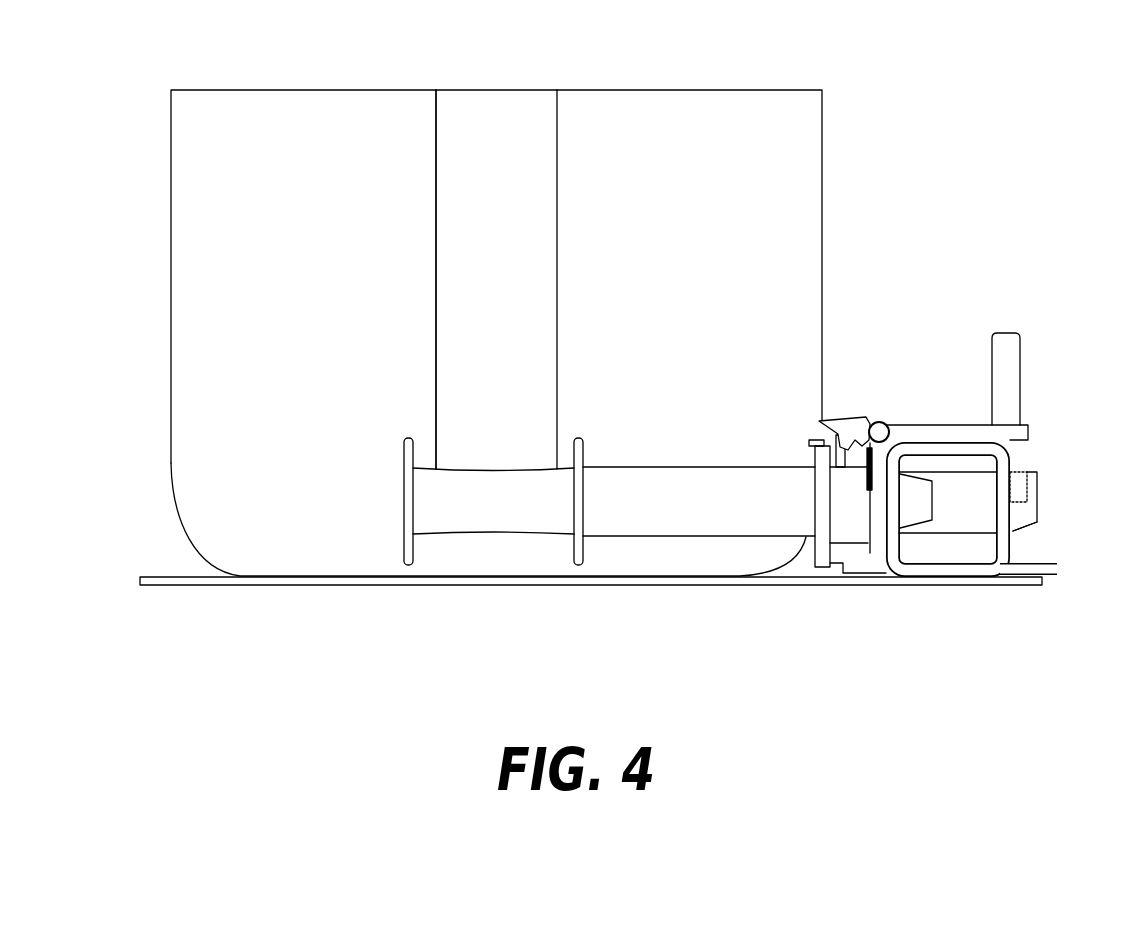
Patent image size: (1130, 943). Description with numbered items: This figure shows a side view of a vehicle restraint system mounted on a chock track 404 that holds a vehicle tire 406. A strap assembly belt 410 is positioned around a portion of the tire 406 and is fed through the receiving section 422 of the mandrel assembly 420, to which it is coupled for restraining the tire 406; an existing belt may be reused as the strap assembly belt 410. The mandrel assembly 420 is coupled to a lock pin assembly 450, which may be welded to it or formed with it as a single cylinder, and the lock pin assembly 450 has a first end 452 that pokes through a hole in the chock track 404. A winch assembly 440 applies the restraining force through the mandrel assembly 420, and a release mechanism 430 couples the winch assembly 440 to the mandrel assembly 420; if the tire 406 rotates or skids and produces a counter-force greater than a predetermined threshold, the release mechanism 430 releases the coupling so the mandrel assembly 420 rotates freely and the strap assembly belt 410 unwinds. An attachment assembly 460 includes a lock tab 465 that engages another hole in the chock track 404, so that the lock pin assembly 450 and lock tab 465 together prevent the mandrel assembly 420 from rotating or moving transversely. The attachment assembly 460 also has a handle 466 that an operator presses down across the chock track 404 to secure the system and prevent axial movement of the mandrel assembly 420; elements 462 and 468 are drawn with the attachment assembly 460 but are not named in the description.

The chock track 404 is at (1000, 462).
The tire 406 is at (787, 167).
The strap assembly belt 410 is at (468, 102).
The mandrel assembly 420 is at (500, 518).
The receiving section 422 is at (453, 473).
The release mechanism 430 is at (818, 558).
The winch assembly 440 is at (865, 535).
The lock pin assembly 450 is at (977, 518).
The first end 452 is at (1022, 500).
The attachment assembly 460 is at (937, 422).
The latch 462 is at (841, 424).
The lock tab 465 is at (925, 517).
The handle 466 is at (1010, 374).
The foot 468 is at (1025, 514).